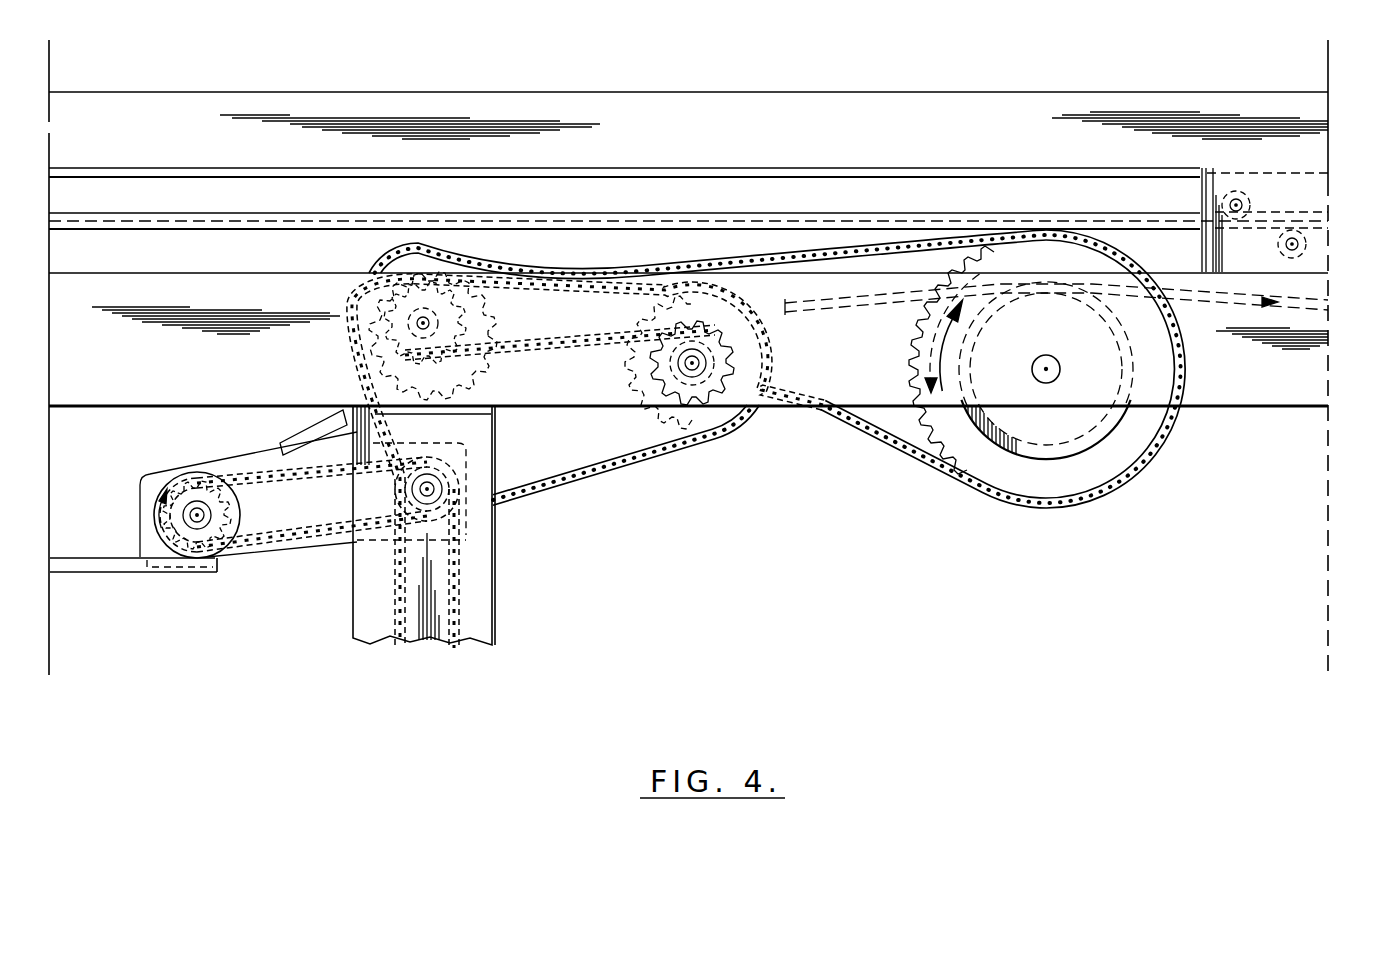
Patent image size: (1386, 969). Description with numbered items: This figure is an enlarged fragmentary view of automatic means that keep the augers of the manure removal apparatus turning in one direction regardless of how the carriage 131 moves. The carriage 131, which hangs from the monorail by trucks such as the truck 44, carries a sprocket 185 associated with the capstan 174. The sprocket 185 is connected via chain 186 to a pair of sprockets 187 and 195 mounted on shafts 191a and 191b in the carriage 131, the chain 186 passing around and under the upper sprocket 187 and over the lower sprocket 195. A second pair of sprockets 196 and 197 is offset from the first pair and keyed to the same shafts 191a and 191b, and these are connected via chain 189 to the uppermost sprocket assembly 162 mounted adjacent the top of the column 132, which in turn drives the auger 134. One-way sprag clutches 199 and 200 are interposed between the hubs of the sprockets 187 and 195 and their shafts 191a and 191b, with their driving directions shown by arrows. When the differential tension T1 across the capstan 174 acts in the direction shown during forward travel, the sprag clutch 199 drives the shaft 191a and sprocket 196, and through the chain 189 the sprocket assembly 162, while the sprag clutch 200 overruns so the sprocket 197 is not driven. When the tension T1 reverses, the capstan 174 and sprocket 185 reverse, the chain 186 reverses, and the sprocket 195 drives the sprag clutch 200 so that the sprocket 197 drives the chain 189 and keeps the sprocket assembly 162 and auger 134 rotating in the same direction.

The truck 44 is at (1283, 185).
The carriage 131 is at (866, 355).
The column 132 is at (480, 615).
The auger 134 is at (180, 483).
The sprocket assembly 162 is at (432, 497).
The capstan 174 is at (1083, 427).
The sprocket 185 is at (1020, 474).
The chain 186 is at (905, 455).
The upper sprocket 187 is at (472, 356).
The chain 189 is at (604, 470).
The shaft 191a is at (420, 323).
The shaft 191b is at (703, 370).
The lower sprocket 195 is at (628, 365).
The sprocket 196 is at (478, 308).
The sprocket 197 is at (710, 420).
The one-way sprag clutch 199 is at (358, 352).
The one-way sprag clutch 200 is at (680, 372).
The differential tension T1 is at (1262, 300).